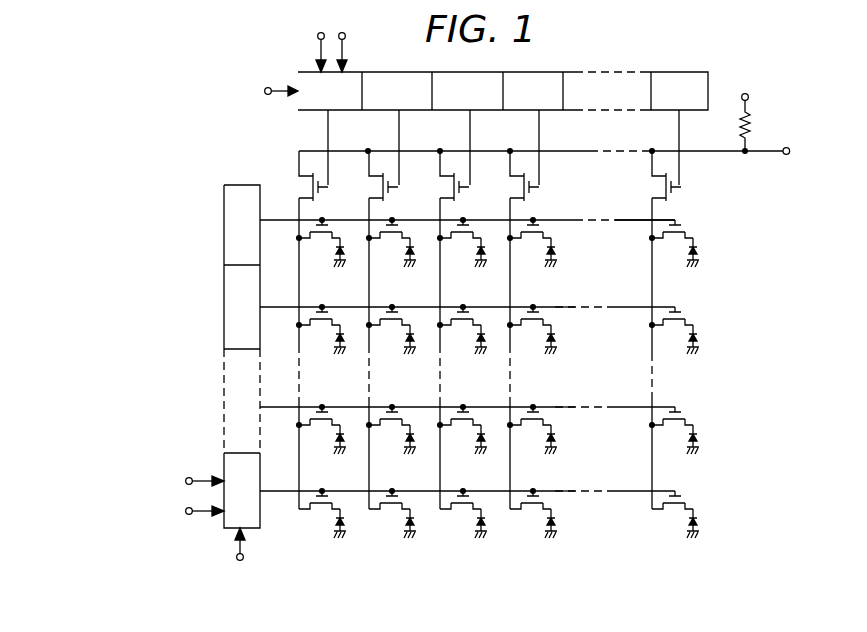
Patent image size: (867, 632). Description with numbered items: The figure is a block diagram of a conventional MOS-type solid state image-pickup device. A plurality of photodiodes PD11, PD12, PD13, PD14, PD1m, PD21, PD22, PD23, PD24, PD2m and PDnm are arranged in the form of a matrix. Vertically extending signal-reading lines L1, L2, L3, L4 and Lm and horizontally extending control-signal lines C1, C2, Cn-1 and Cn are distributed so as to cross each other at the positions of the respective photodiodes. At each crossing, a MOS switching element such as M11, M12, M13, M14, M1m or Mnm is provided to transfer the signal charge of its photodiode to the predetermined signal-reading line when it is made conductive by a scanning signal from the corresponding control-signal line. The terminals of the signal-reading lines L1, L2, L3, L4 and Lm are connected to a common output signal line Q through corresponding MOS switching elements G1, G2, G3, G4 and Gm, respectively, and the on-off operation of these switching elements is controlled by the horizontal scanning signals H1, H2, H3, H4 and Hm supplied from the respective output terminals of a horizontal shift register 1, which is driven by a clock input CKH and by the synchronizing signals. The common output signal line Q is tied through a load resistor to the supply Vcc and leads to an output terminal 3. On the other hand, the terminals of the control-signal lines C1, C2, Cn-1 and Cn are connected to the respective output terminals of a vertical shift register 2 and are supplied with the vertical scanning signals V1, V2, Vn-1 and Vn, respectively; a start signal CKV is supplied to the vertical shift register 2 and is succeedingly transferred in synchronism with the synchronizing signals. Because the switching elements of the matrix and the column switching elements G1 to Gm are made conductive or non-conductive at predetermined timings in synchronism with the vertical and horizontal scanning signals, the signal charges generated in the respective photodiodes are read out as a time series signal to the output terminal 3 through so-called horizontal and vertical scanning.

The horizontal shift register 1 is at (383, 72).
The vertical shift register 2 is at (224, 299).
The output terminal 3 is at (786, 147).
The common output signal line Q is at (607, 151).
The supply voltage through load resistor Vcc is at (744, 112).
The horizontal clock input CKH is at (258, 92).
The start signal CKV is at (241, 562).
The horizontal scanning signal H1 is at (328, 131).
The horizontal scanning signal H2 is at (399, 131).
The horizontal scanning signal H3 is at (470, 131).
The horizontal scanning signal H4 is at (539, 131).
The horizontal scanning signal Hm is at (679, 131).
The MOS switching element G1 is at (319, 192).
The MOS switching element G2 is at (389, 192).
The MOS switching element G3 is at (460, 192).
The MOS switching element G4 is at (530, 192).
The MOS switching element Gm is at (672, 192).
The signal reading line L1 is at (299, 469).
The signal reading line L2 is at (369, 469).
The signal reading line L3 is at (440, 469).
The signal reading line L4 is at (510, 469).
The signal reading line Lm is at (652, 469).
The vertical scanning signal Vn is at (285, 220).
The vertical scanning signal Vn-1 is at (280, 307).
The vertical scanning signal V2 is at (279, 407).
The vertical scanning signal V1 is at (279, 491).
The control-signal line Cn is at (618, 220).
The control-signal line Cn-1 is at (560, 307).
The control-signal line C2 is at (570, 407).
The control-signal line C1 is at (565, 491).
The MOS switching element M11 is at (312, 242).
The MOS switching element M12 is at (382, 242).
The MOS switching element M13 is at (453, 242).
The MOS switching element M14 is at (523, 242).
The MOS switching element M1m is at (665, 243).
The MOS switching element Mnm is at (656, 517).
The photodiode PD11 is at (343, 248).
The photodiode PD12 is at (413, 248).
The photodiode PD13 is at (484, 248).
The photodiode PD14 is at (555, 247).
The photodiode PD1m is at (698, 247).
The photodiode PD21 is at (343, 335).
The photodiode PD22 is at (413, 335).
The photodiode PD23 is at (484, 335).
The photodiode PD24 is at (556, 334).
The photodiode PD2m is at (698, 334).
The photodiode PDnm is at (698, 519).